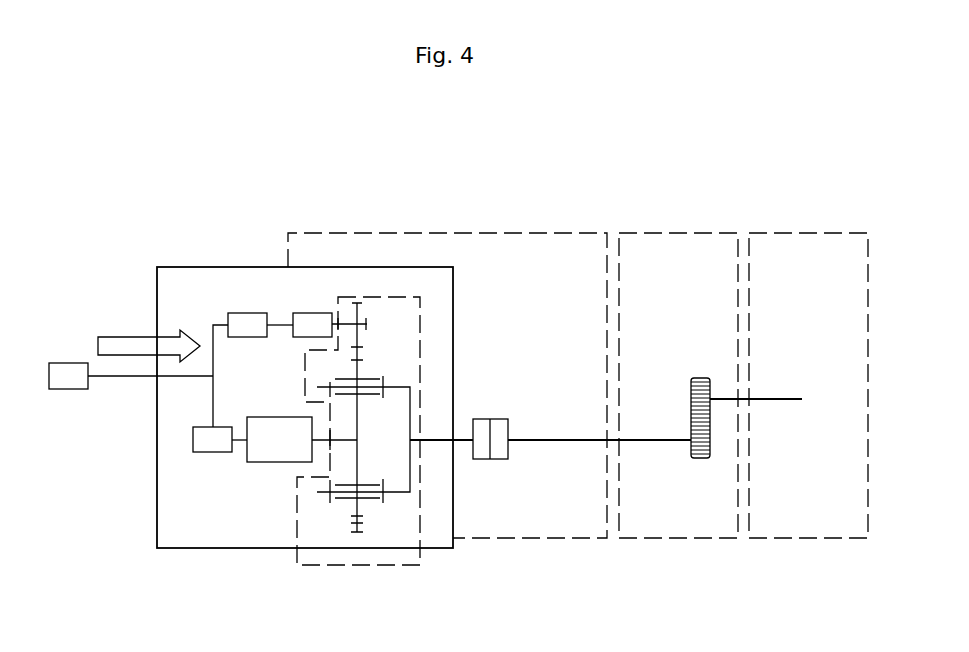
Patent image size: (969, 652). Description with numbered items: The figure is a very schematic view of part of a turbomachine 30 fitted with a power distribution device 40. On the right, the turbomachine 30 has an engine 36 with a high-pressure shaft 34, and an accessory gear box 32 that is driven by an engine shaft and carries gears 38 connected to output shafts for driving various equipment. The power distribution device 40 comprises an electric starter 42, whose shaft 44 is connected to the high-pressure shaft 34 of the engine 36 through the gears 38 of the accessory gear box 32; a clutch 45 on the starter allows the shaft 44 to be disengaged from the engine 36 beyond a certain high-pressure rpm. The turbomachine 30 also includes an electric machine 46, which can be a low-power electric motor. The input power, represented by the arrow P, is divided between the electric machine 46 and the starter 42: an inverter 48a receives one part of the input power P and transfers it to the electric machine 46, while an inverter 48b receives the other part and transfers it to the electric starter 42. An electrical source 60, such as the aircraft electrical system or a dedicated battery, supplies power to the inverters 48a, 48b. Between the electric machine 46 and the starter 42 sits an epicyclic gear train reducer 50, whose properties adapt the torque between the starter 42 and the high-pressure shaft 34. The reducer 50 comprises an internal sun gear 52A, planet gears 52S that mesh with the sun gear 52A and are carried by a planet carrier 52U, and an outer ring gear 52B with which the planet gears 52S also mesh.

The turbomachine 30 is at (520, 167).
The power distribution device 40 is at (447, 232).
The accessory gear box 32 is at (680, 232).
The engine 36 is at (810, 232).
The high-pressure shaft 34 is at (772, 398).
The gears 38 is at (691, 400).
The shaft of the electric starter 44 is at (553, 438).
The clutch 45 is at (497, 460).
The electric starter 42 is at (247, 458).
The electric machine 46 is at (310, 313).
The inverter 48a is at (237, 313).
The inverter 48b is at (193, 440).
The epicyclic gear train reducer 50 is at (357, 566).
The planet gears 52S is at (339, 369).
The outer ring gear 52B is at (370, 302).
The sun gear 52A is at (341, 455).
The planet carrier 52U is at (318, 520).
The electrical source 60 is at (65, 389).
The input power P is at (118, 337).